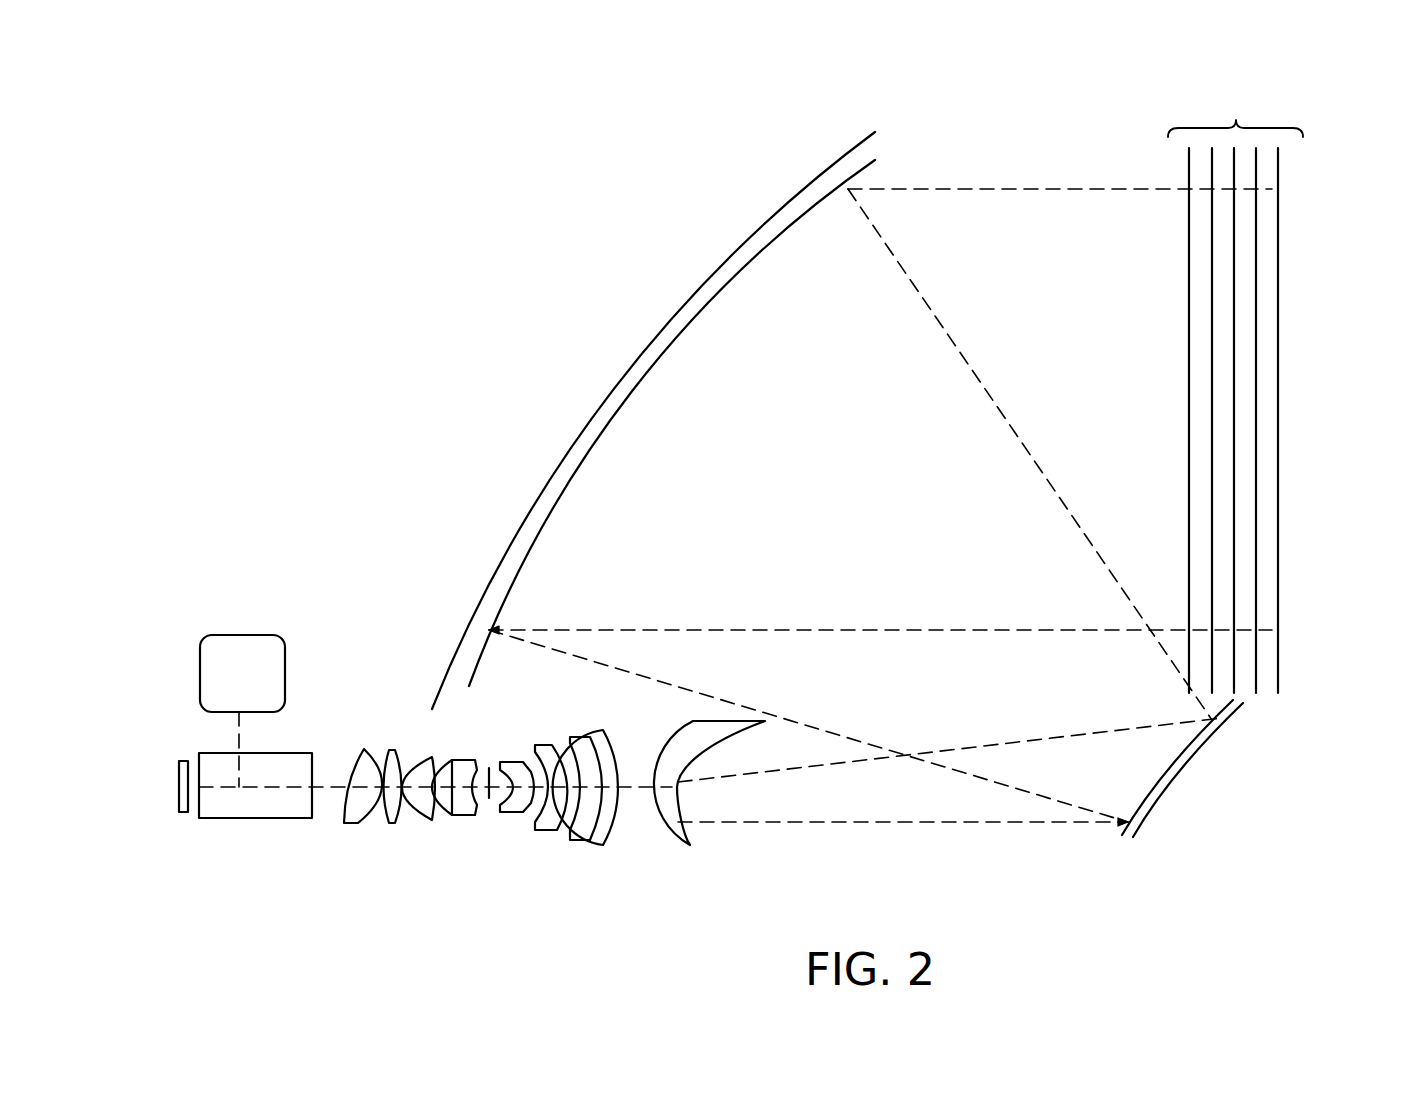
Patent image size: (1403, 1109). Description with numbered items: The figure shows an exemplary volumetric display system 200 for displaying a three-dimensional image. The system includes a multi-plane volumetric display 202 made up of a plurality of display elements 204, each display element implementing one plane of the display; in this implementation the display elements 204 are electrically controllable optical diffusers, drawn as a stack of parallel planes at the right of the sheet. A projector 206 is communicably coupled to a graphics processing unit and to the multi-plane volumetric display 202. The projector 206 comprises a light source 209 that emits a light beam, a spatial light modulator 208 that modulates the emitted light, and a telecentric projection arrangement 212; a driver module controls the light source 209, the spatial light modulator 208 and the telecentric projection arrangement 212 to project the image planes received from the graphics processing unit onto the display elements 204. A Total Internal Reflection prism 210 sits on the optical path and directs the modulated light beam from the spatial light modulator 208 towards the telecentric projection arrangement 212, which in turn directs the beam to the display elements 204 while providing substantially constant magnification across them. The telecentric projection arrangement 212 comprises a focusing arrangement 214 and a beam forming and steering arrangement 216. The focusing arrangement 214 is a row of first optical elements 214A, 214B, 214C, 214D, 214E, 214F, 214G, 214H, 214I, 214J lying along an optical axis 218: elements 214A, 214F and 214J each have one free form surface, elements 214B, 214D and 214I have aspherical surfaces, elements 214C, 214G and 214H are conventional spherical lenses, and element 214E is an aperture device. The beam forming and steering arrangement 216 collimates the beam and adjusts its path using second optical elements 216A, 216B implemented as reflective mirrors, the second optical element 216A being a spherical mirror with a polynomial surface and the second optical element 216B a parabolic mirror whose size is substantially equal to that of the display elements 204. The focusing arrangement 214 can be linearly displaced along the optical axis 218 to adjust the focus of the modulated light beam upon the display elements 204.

The volumetric display system 200 is at (248, 147).
The multi-plane volumetric display 202 is at (1323, 138).
The display elements 204 is at (1235, 101).
The projector 206 is at (215, 396).
The spatial light modulator 208 is at (183, 812).
The light source 209 is at (213, 668).
The Total Internal Reflection (TIR) prism 210 is at (243, 818).
The telecentric projection arrangement 212 is at (323, 572).
The focusing arrangement 214 is at (390, 728).
The first optical element 214A is at (348, 822).
The first optical element 214B is at (392, 823).
The first optical element 214C is at (427, 820).
The first optical element 214D is at (463, 818).
The first optical element 214E is at (490, 767).
The first optical element 214F is at (508, 814).
The first optical element 214G is at (540, 830).
The first optical element 214H is at (582, 842).
The first optical element 214I is at (623, 830).
The first optical element 214J is at (670, 842).
The beam forming and steering arrangement 216 is at (916, 492).
The second optical element 216A is at (1187, 757).
The second optical element 216B is at (628, 385).
The optical axis 218 is at (162, 790).